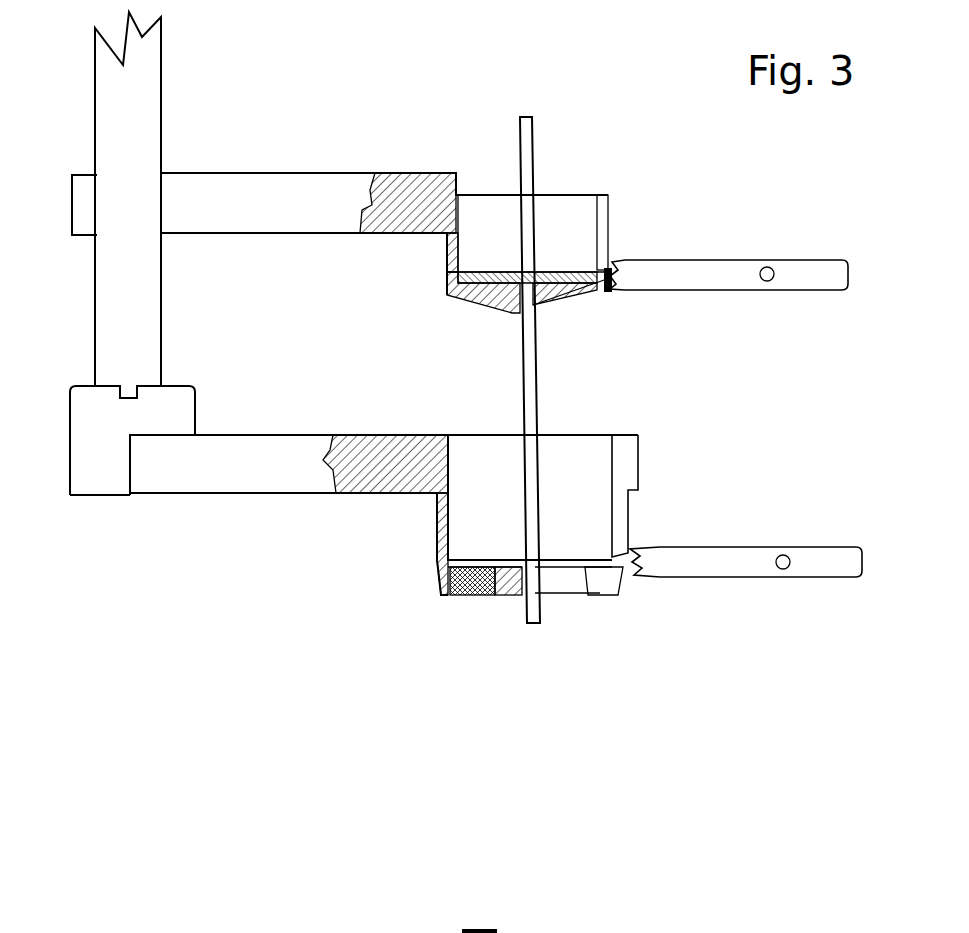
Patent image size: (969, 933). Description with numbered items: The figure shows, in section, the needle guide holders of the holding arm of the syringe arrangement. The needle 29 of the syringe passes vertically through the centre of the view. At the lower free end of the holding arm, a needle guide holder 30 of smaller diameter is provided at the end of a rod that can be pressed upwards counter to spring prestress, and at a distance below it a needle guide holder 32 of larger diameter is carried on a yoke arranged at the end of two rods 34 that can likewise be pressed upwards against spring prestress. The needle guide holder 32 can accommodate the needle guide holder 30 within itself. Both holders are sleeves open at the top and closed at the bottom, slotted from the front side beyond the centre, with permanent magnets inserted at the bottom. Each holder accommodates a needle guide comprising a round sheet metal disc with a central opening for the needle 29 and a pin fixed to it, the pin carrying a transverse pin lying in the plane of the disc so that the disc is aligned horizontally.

The needle 29 is at (536, 371).
The needle guide holder 30 is at (512, 273).
The needle guide holder 32 is at (498, 552).
The rods 34 is at (115, 310).